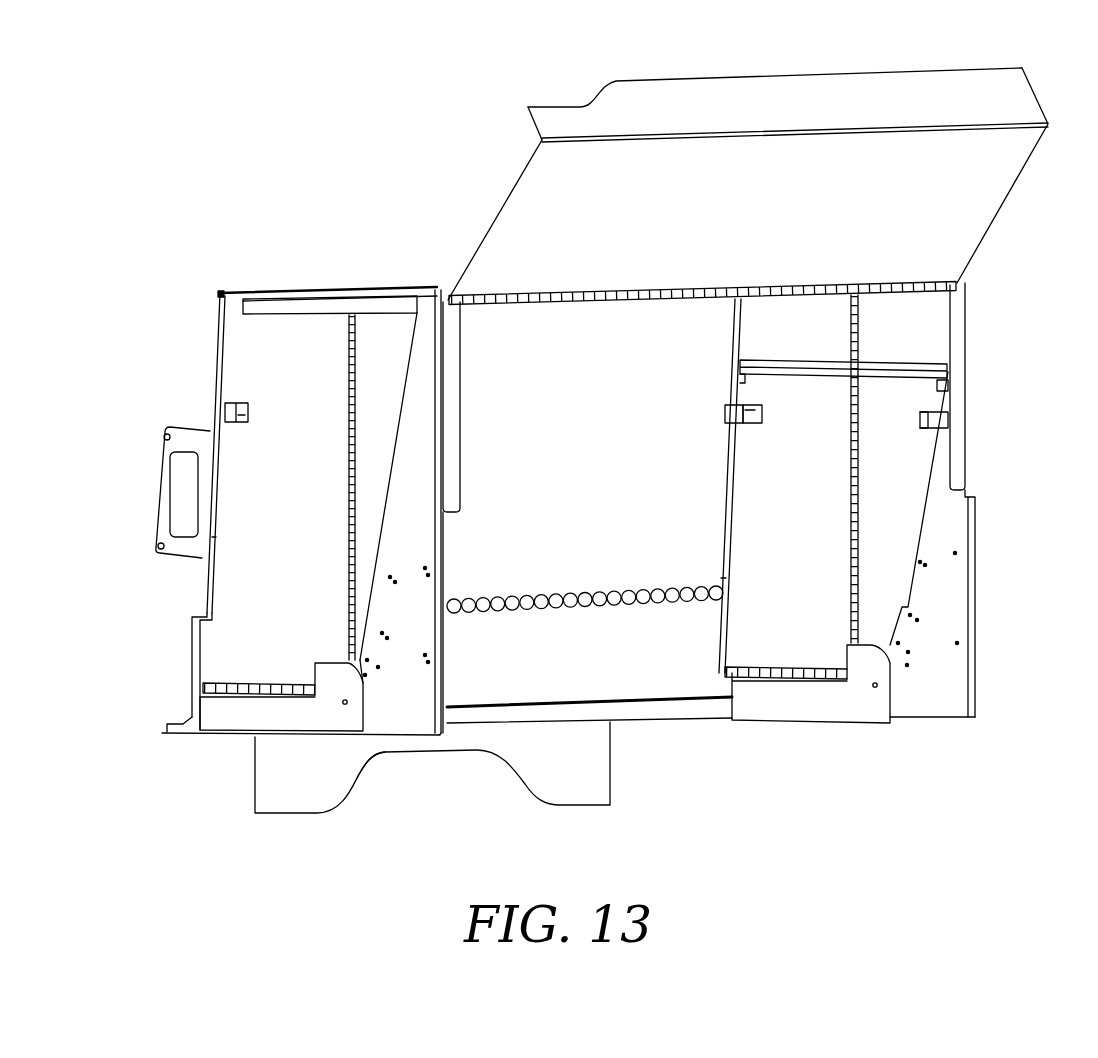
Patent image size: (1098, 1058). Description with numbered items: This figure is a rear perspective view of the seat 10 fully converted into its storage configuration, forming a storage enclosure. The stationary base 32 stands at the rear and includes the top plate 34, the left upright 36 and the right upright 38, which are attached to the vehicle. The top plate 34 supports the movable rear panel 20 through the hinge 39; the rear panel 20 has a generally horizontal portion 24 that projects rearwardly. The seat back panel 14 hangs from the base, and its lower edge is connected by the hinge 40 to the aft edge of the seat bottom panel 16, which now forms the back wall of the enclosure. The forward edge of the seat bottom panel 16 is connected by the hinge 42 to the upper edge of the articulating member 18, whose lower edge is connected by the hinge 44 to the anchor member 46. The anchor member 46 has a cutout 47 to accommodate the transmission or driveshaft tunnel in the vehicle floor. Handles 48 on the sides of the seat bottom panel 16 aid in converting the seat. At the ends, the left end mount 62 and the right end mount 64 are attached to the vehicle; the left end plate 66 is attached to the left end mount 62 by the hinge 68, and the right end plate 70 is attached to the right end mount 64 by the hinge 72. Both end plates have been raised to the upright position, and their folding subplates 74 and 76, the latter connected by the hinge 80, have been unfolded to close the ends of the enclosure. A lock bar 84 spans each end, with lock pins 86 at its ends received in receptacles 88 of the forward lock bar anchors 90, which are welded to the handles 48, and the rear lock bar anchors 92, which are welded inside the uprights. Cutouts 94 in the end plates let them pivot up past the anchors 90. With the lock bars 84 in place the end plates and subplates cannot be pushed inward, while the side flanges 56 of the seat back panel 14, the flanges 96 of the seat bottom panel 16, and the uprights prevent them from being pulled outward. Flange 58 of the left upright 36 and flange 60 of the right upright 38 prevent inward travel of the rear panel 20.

The seat 10 is at (150, 172).
The seat back panel 14 is at (395, 289).
The seat bottom panel 16 is at (215, 357).
The articulating member 18 is at (196, 700).
The rear panel 20 is at (770, 222).
The horizontal portion 24 is at (1023, 87).
The stationary base 32 is at (1018, 563).
The top plate 34 is at (437, 289).
The left upright 36 is at (418, 712).
The right upright 38 is at (950, 699).
The hinge 39 is at (625, 292).
The hinge 40 is at (221, 290).
The hinge 42 is at (581, 598).
The hinge 44 is at (175, 726).
The anchor member 46 is at (308, 787).
The cutout 47 is at (358, 785).
The handles 48 is at (162, 494).
The side flanges 56 is at (297, 315).
The flange 58 is at (461, 430).
The flange 60 is at (963, 469).
The left end mount 62 is at (323, 727).
The right end mount 64 is at (860, 711).
The left end plate 66 is at (293, 501).
The hinge 68 is at (264, 682).
The right end plate 70 is at (800, 511).
The hinge 72 is at (777, 667).
The subplate 74 is at (398, 372).
The subplate 76 is at (903, 511).
The hinge 80 is at (851, 544).
The lock bars 84 is at (793, 361).
The lock pins 86 is at (740, 377).
The receptacles 88 is at (746, 404).
The forward lock bar anchors 90 is at (245, 420).
The rear lock bar anchors 92 is at (919, 420).
The cutouts 94 is at (248, 404).
The flanges 96 is at (213, 538).